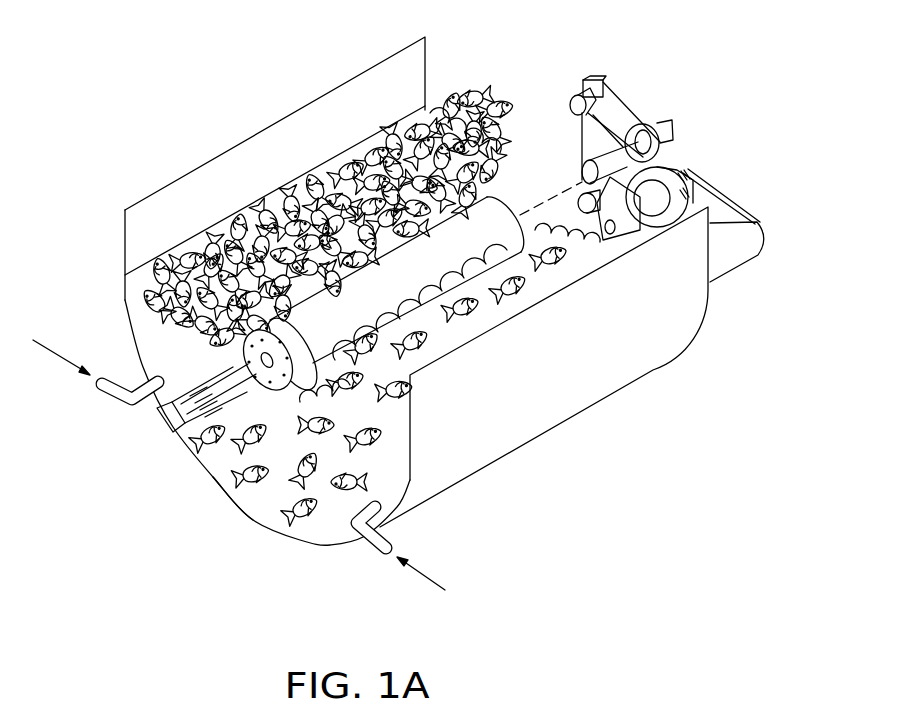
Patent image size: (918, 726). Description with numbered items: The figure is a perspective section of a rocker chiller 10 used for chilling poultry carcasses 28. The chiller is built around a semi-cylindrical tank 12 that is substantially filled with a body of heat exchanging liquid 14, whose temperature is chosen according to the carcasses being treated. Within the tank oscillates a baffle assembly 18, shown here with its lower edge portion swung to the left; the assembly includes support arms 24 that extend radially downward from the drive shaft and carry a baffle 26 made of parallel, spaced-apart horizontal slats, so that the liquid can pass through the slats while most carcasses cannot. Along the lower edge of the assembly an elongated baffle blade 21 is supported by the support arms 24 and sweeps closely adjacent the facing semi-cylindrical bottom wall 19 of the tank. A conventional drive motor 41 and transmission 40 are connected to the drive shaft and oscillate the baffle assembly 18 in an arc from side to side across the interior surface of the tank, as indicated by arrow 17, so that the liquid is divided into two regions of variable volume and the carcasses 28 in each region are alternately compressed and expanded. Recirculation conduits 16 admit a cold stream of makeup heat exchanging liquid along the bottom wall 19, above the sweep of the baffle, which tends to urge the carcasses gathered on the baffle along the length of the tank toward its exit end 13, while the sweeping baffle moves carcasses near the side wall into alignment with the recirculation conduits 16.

The rocker chiller 10 is at (212, 127).
The semi-cylindrical tank 12 is at (595, 355).
The exit end 13 is at (540, 157).
The heat exchanging liquid 14 is at (492, 153).
The recirculation conduits 16 is at (118, 405).
The arrow 17 is at (313, 332).
The baffle assembly 18 is at (212, 373).
The semi-cylindrical bottom wall 19 is at (223, 458).
The baffle blade 21 is at (165, 415).
The support arms 24 is at (205, 377).
The baffle 26 is at (230, 385).
The carcasses 28 is at (462, 153).
The transmission 40 is at (642, 90).
The drive motor 41 is at (735, 238).